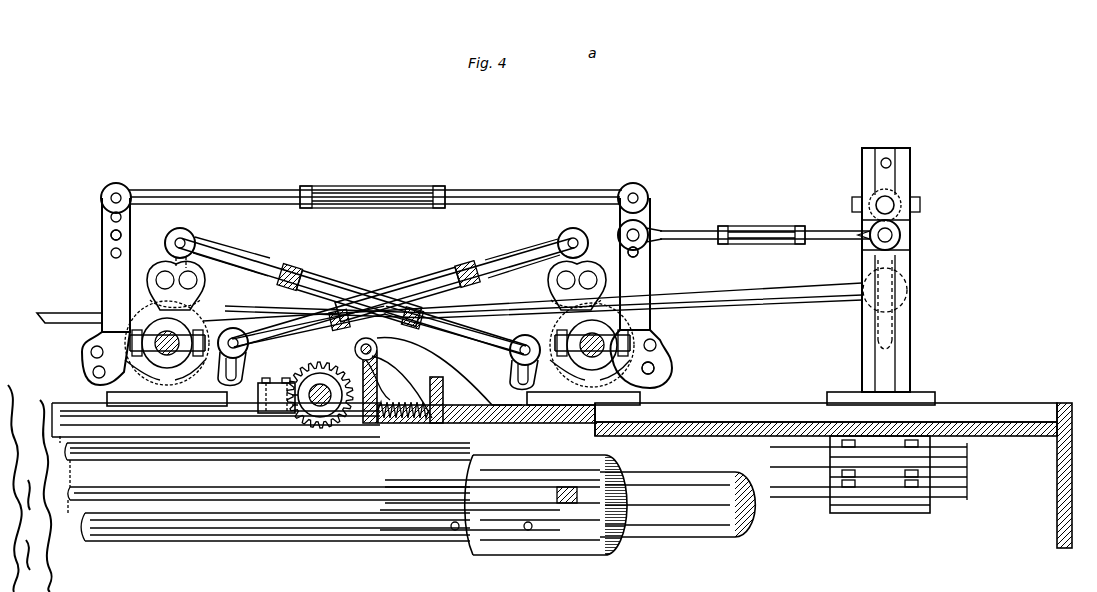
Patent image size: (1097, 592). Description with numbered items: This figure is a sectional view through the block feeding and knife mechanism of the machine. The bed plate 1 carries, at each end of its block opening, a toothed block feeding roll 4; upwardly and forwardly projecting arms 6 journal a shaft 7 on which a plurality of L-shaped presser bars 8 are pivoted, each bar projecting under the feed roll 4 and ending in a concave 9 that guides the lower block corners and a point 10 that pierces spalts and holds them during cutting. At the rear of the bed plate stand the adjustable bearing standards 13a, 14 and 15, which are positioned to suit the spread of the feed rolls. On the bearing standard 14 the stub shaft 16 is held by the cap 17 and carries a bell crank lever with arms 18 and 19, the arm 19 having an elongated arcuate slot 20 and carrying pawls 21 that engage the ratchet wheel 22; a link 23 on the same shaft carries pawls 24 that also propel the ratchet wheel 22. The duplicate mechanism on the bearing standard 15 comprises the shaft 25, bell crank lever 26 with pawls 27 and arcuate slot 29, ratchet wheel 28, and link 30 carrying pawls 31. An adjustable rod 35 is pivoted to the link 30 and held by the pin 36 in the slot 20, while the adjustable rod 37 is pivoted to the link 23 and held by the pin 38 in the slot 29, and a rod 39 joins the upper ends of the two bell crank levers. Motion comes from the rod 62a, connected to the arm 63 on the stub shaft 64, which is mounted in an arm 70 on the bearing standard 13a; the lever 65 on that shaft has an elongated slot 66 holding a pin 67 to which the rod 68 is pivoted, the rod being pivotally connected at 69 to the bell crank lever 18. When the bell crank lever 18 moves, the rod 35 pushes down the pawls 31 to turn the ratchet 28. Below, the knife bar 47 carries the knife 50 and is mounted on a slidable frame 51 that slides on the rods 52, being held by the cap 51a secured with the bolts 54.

The bed plate 1 is at (733, 406).
The block feeding rolls 4 is at (312, 372).
The arms 6 is at (420, 362).
The shaft 7 is at (370, 348).
The presser bars 8 is at (385, 384).
The concave 9 is at (290, 418).
The point 10 is at (300, 425).
The bearing standard 13a is at (838, 394).
The bearing standard 14 is at (628, 400).
The bearing standard 15 is at (198, 395).
The stub shaft 16 is at (640, 314).
The cap 17 is at (555, 300).
The bell crank lever arm 18 is at (648, 268).
The bell crank lever arm 19 is at (560, 380).
The elongated arcuate slot 20 is at (516, 380).
The pawls 21 is at (662, 338).
The ratchet wheel 22 is at (658, 368).
The link 23 is at (720, 283).
The pawls 24 is at (506, 264).
The stub shaft 25 is at (210, 325).
The bell crank lever 26 is at (108, 266).
The pawls 27 is at (96, 338).
The ratchet wheel 28 is at (140, 306).
The elongated arcuate slot 29 is at (238, 376).
The link 30 is at (155, 276).
The pawls 31 is at (205, 282).
The adjustable rod 35 is at (325, 276).
The pin 36 is at (518, 356).
The adjustable rod 37 is at (395, 284).
The pin 38 is at (240, 346).
The rod 39 is at (476, 192).
The knife bar 47 is at (186, 520).
The knife 50 is at (315, 450).
The slidable frame 51 is at (568, 478).
The cap 51a is at (512, 535).
The rods 52 is at (690, 512).
The bolts 54 is at (532, 530).
The rod 62a is at (796, 296).
The arm 63 is at (905, 322).
The stub shaft 64 is at (892, 202).
The lever 65 is at (910, 228).
The elongated slot 66 is at (890, 167).
The pin 67 is at (900, 246).
The rod 68 is at (820, 240).
The pivot connection 69 is at (648, 230).
The arm 70 is at (898, 358).